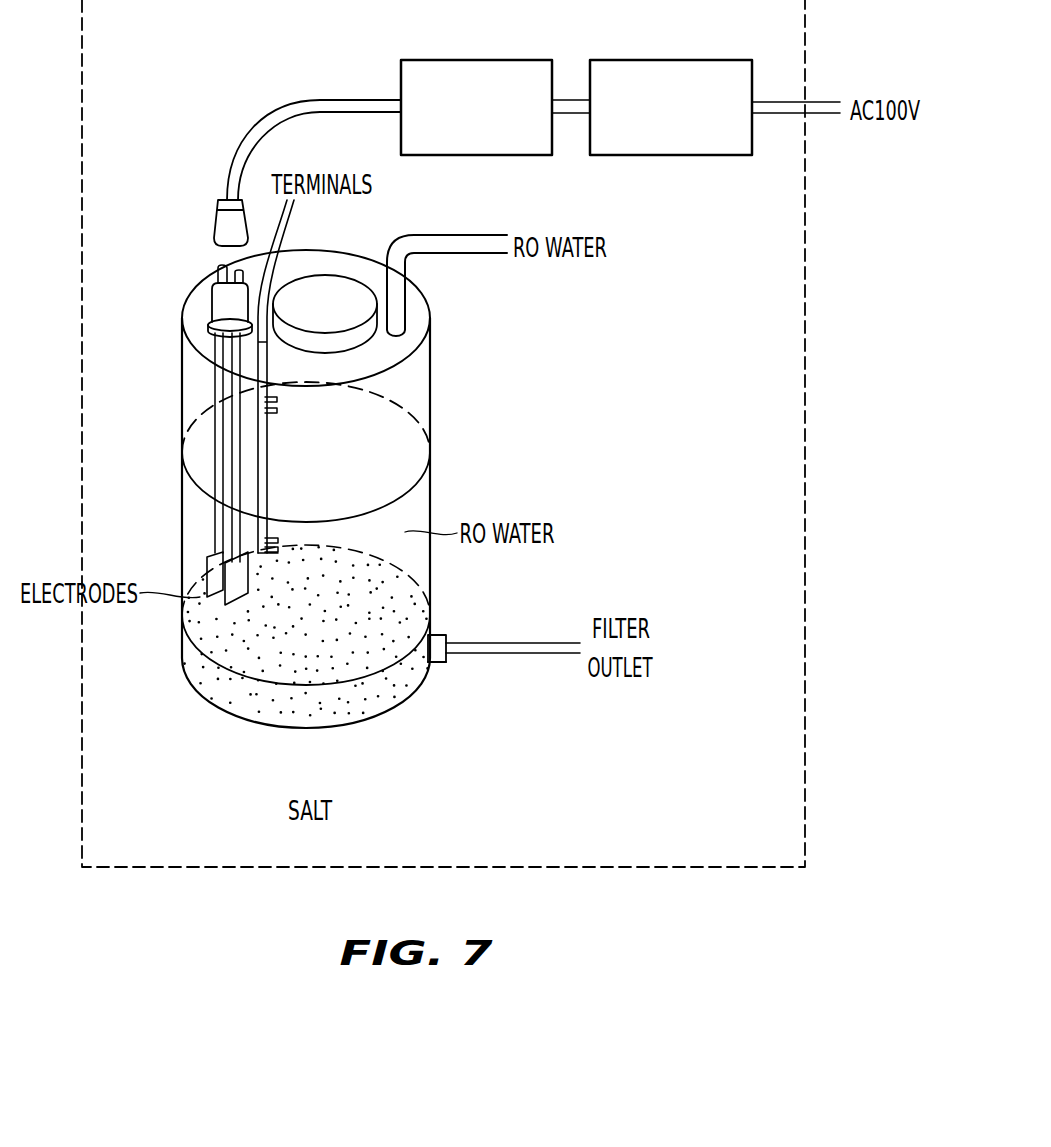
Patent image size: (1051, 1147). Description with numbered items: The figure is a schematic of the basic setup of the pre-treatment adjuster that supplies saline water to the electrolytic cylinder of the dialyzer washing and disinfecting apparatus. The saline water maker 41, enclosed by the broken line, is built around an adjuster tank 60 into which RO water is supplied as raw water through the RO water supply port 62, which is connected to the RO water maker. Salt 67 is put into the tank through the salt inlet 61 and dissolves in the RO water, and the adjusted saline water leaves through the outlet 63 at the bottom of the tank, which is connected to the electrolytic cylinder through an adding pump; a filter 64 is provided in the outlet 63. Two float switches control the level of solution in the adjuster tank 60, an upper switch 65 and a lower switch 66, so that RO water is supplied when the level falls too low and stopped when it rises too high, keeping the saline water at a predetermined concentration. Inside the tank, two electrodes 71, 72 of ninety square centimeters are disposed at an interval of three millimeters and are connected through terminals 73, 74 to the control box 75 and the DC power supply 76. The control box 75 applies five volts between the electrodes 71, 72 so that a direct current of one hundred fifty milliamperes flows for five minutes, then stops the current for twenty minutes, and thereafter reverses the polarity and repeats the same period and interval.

The saline water maker 41 is at (795, 452).
The adjuster tank 60 is at (182, 351).
The salt inlet 61 is at (347, 290).
The RO water supply port 62 is at (405, 325).
The outlet 63 is at (446, 639).
The filter 64 is at (437, 666).
The upper float switch 65 is at (279, 411).
The lower float switch 66 is at (276, 540).
The salt 67 is at (292, 672).
The electrode 71 is at (207, 562).
The electrode 72 is at (224, 602).
The terminal 73 is at (213, 308).
The terminal 74 is at (215, 224).
The control box 75 is at (455, 58).
The DC power supply 76 is at (655, 58).